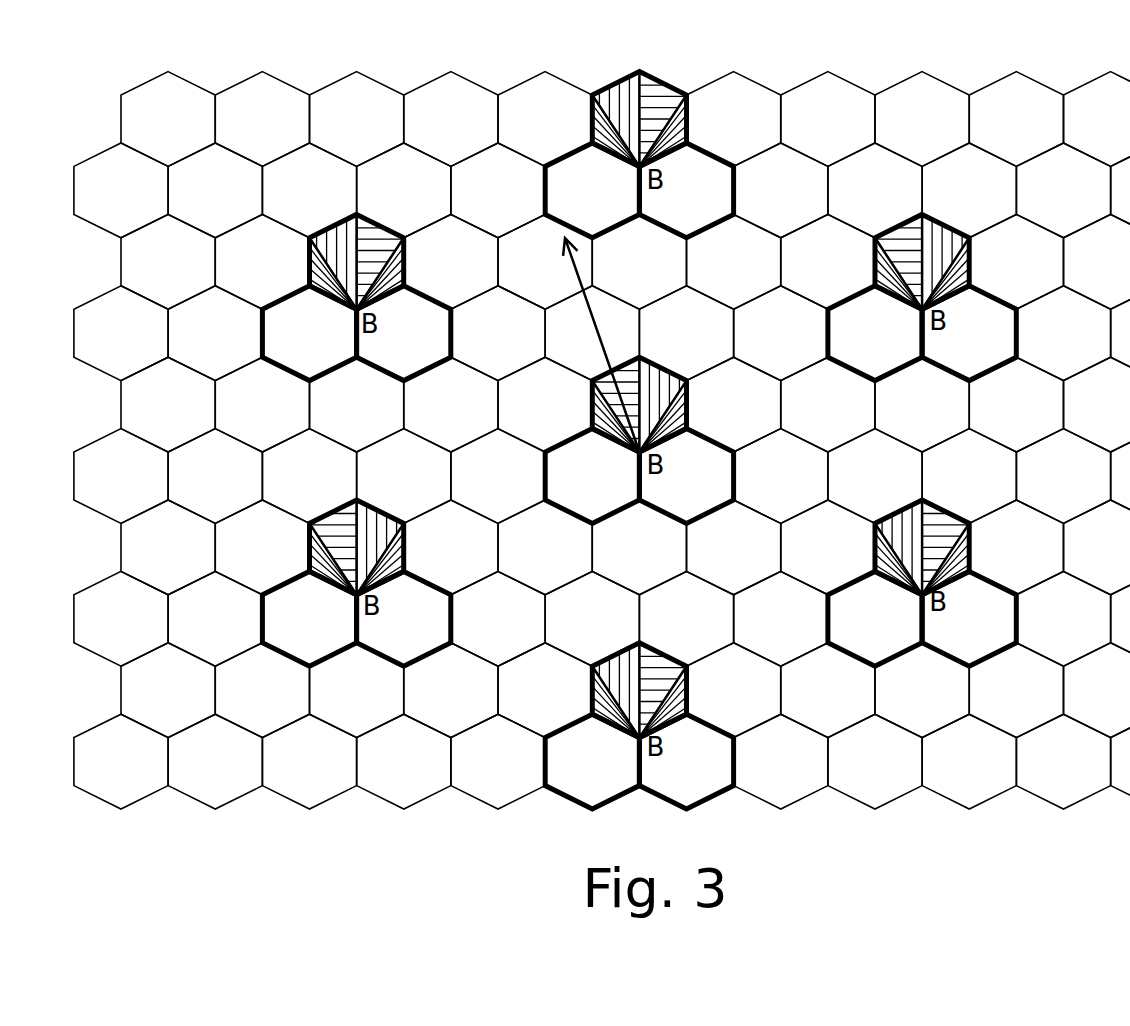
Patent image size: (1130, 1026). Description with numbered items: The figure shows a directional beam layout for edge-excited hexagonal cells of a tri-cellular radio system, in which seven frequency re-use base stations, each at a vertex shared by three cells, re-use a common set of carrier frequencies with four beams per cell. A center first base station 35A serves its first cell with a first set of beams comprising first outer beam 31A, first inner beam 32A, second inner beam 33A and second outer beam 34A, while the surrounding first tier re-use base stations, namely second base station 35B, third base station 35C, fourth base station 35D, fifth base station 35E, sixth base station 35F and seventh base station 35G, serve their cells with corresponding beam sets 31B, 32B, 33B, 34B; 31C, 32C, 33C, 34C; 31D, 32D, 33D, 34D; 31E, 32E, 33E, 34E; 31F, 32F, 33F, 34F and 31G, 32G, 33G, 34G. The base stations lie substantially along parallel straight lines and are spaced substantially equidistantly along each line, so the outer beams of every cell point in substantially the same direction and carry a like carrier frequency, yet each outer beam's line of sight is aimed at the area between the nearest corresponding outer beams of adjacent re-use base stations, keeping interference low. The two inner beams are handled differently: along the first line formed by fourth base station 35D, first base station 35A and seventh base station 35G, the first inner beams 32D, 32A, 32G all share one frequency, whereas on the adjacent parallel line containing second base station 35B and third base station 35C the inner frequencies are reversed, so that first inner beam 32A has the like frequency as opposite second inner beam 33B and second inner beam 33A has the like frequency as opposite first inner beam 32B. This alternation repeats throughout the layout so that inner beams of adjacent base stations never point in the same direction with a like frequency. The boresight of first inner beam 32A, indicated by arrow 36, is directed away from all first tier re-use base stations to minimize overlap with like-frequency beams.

The first outer beam 31A is at (582, 415).
The first inner beam 32A is at (590, 391).
The second inner beam 33A is at (678, 388).
The second outer beam 34A is at (701, 416).
The first base station 35A is at (592, 476).
The first outer beam 31B is at (582, 126).
The first inner beam 32B is at (601, 96).
The second inner beam 33B is at (678, 98).
The second outer beam 34B is at (700, 130).
The second base station 35B is at (592, 190).
The first outer beam 31C is at (298, 271).
The first inner beam 32C is at (317, 240).
The second inner beam 33C is at (395, 243).
The second outer beam 34C is at (419, 273).
The third base station 35C is at (309, 333).
The first outer beam 31D is at (299, 556).
The first inner beam 32D is at (319, 523).
The second inner beam 33D is at (398, 528).
The second outer beam 34D is at (421, 558).
The fourth base station 35D is at (309, 618).
The first outer beam 31E is at (585, 700).
The first inner beam 32E is at (605, 667).
The second inner beam 33E is at (679, 671).
The second outer beam 34E is at (702, 701).
The fifth base station 35E is at (592, 761).
The first outer beam 31F is at (866, 557).
The first inner beam 32F is at (886, 523).
The second inner beam 33F is at (960, 528).
The second outer beam 34F is at (983, 558).
The sixth base station 35F is at (875, 618).
The first outer beam 31G is at (865, 271).
The first inner beam 32G is at (885, 240).
The second inner beam 33G is at (963, 243).
The second outer beam 34G is at (985, 273).
The seventh base station 35G is at (875, 333).
The arrow 36 is at (577, 276).